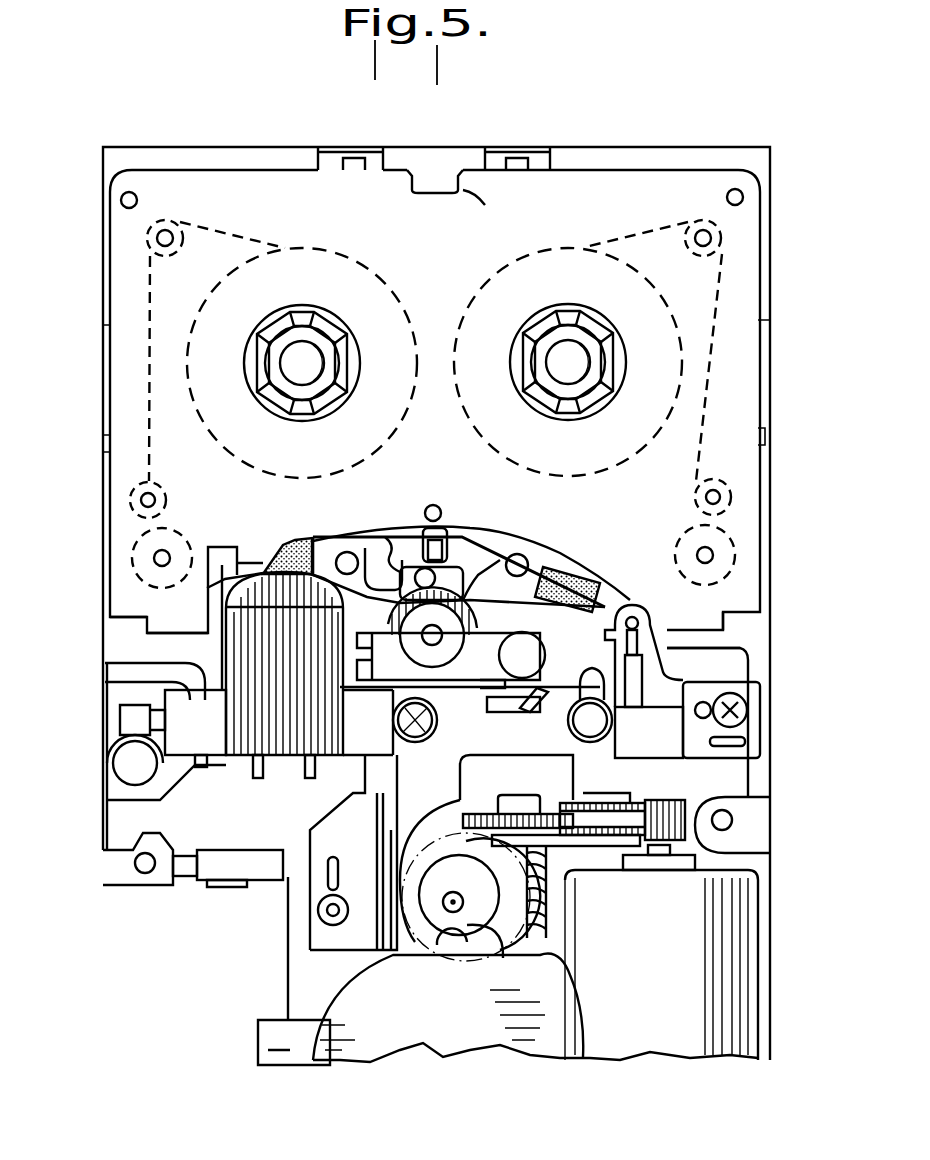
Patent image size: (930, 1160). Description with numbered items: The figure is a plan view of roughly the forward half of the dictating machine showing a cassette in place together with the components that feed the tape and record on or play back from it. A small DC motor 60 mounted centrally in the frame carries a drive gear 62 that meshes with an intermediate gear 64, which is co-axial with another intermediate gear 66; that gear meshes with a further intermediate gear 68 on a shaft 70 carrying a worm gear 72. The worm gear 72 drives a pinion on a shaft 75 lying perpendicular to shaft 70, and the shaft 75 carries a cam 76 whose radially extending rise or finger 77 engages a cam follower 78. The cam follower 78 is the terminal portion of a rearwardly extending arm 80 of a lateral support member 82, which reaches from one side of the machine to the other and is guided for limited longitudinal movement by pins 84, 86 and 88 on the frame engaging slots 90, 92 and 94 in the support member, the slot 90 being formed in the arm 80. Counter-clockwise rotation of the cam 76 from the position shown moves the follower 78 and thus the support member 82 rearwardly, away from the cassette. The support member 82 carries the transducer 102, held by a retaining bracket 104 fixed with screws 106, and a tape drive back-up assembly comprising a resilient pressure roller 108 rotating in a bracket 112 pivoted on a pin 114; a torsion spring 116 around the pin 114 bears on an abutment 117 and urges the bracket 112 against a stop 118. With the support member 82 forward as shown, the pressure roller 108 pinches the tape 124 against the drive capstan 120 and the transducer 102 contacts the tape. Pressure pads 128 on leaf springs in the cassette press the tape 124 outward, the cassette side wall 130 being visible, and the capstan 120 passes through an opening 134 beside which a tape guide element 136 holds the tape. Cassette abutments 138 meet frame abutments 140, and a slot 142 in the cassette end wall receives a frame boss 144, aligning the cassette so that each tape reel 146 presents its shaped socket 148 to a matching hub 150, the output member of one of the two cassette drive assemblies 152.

The DC motor 60 is at (670, 1009).
The drive gear 62 is at (690, 810).
The intermediate gear 64 is at (650, 800).
The intermediate gear 66 is at (650, 842).
The intermediate gear 68 is at (550, 806).
The shaft 70 is at (508, 795).
The worm gear 72 is at (550, 905).
The shaft 75 is at (450, 893).
The cam 76 is at (485, 920).
The rise or finger 77 is at (497, 950).
The cam follower 78 is at (446, 942).
The rearwardly extending arm 80 is at (404, 952).
The lateral support member 82 is at (462, 748).
The pin 84 is at (322, 912).
The pin 86 is at (113, 760).
The pin 88 is at (575, 720).
The slot 90 is at (327, 878).
The slot 92 is at (120, 718).
The slot 94 is at (592, 665).
The transducer 102 is at (262, 768).
The retaining bracket 104 is at (340, 760).
The screws 106 is at (165, 700).
The pressure roller 108 is at (478, 558).
The bracket 112 is at (483, 640).
The pin 114 is at (518, 652).
The torsion spring 116 is at (530, 691).
The abutment 117 is at (505, 710).
The stop 118 is at (408, 645).
The drive capstan 120 is at (432, 527).
The tape 124 is at (356, 535).
The pressure pads 128 is at (285, 548).
The side walls 130 is at (412, 540).
The opening 134 is at (435, 575).
The tape guide element 136 is at (383, 540).
The abutments 138 is at (178, 640).
The abutments 140 is at (170, 640).
The slot 142 is at (495, 205).
The boss 144 is at (443, 180).
The tape reels 146 is at (288, 322).
The socket 148 is at (338, 395).
The hub 150 is at (272, 378).
The cassette drive assemblies 152 is at (353, 298).